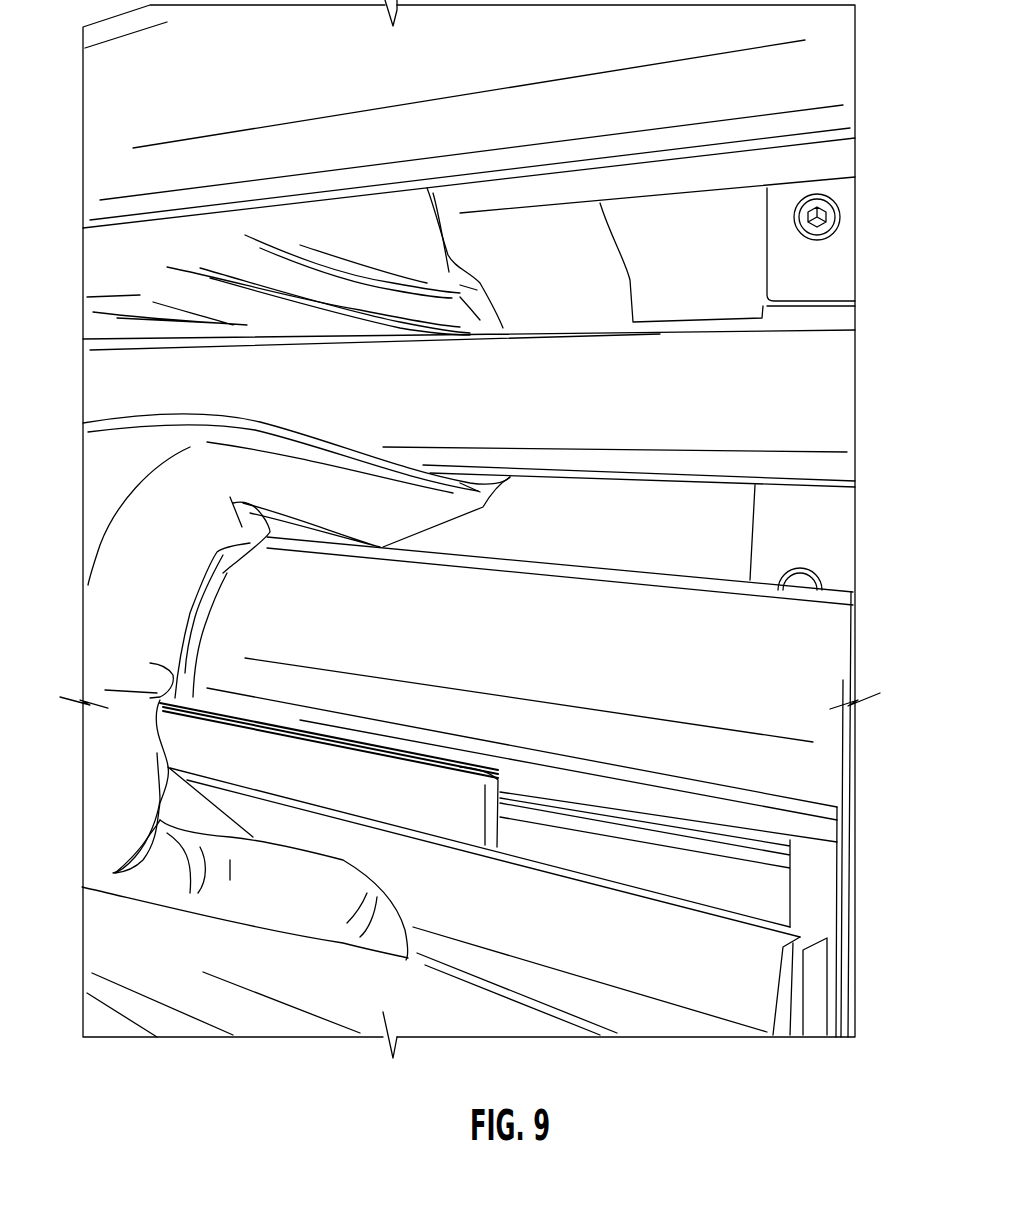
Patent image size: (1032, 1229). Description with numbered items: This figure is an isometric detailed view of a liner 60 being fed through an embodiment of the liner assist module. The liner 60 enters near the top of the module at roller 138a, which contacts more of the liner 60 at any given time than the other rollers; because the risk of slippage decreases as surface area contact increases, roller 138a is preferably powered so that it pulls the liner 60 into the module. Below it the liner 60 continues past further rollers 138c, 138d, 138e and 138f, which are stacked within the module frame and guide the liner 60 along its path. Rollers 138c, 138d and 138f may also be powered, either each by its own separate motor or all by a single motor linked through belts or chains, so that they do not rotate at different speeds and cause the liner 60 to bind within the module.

The liner 60 is at (104, 276).
The roller 138a is at (823, 85).
The roller 138c is at (827, 400).
The roller 138d is at (827, 667).
The support rail 138e is at (773, 957).
The roller 138f is at (473, 1018).